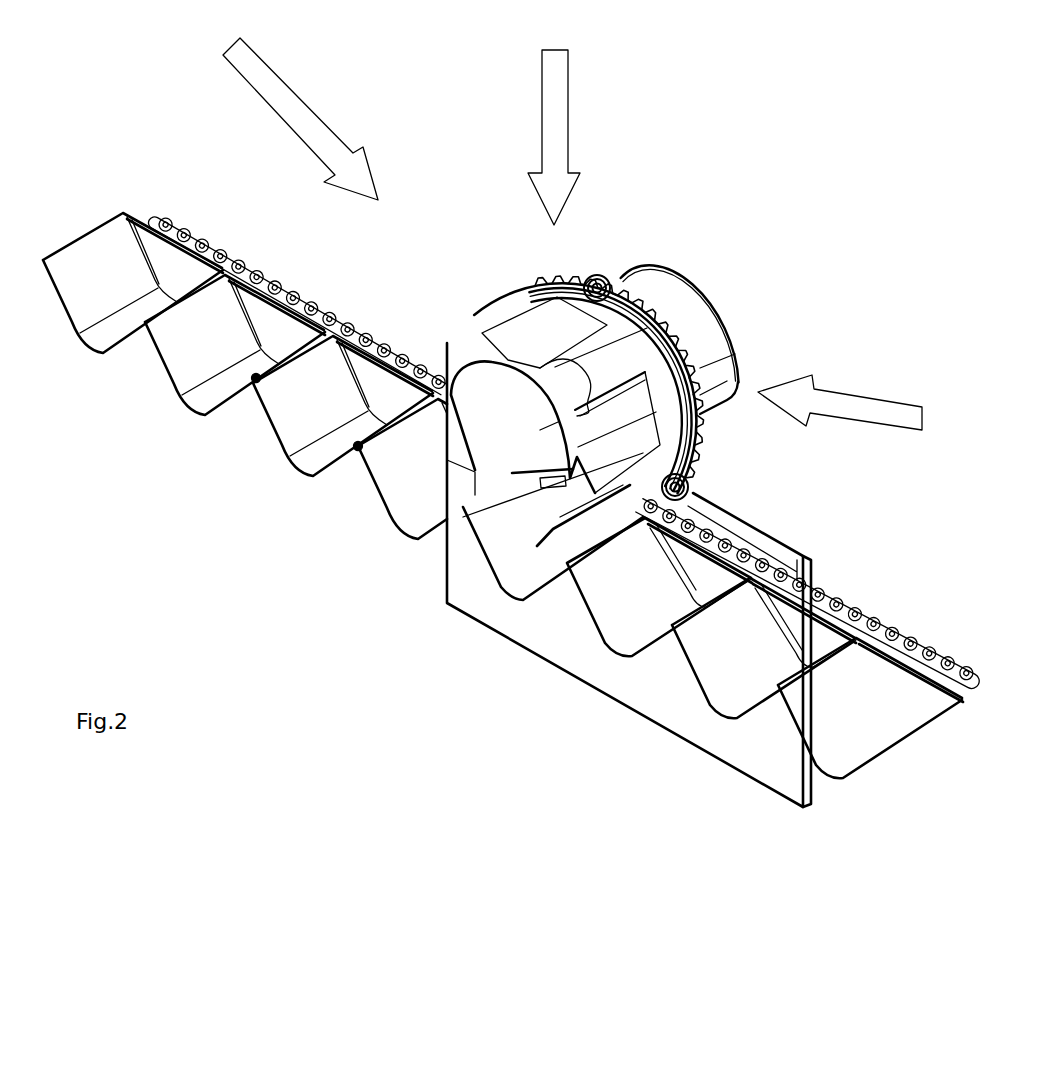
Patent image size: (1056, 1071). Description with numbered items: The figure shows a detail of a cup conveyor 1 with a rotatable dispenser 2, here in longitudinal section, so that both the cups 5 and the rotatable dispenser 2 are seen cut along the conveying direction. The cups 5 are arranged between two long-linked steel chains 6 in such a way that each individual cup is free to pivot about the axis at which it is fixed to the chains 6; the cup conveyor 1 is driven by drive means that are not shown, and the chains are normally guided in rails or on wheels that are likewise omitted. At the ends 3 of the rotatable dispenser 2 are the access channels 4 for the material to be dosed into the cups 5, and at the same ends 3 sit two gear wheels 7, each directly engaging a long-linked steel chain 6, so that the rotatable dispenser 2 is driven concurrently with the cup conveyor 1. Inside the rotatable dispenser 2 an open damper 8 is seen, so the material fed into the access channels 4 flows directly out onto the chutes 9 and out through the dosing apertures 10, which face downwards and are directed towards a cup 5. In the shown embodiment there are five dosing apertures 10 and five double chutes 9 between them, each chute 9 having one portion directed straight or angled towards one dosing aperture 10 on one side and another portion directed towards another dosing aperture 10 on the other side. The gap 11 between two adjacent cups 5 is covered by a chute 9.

The cup conveyor 1 is at (300, 119).
The rotatable dispenser 2 is at (554, 137).
The ends 3 is at (840, 402).
The access channels 4 is at (682, 329).
The cups 5 is at (503, 495).
The long-linked steel chains 6 is at (306, 291).
The gear wheels 7 is at (585, 271).
The open damper 8 is at (511, 476).
The chutes 9 is at (531, 323).
The dosing apertures 10 is at (600, 372).
The gap 11 is at (254, 381).